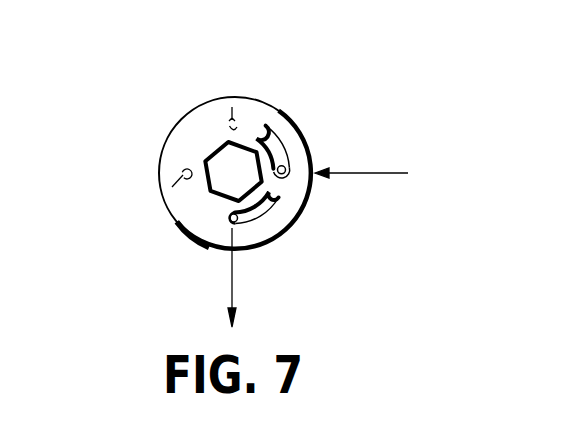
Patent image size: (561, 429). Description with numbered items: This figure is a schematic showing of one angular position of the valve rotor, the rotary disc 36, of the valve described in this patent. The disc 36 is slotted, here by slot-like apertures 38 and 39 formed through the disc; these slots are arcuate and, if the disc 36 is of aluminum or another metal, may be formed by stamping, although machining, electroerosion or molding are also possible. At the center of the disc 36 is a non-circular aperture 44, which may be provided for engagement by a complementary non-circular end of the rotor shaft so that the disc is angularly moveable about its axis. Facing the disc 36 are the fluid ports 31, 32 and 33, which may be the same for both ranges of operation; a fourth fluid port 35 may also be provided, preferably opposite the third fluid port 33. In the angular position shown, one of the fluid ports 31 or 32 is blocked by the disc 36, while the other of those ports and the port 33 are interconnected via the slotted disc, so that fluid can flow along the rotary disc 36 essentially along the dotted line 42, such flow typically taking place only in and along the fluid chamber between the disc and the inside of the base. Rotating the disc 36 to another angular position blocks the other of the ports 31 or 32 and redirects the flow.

The fluid port 31 is at (233, 232).
The fluid port 32 is at (228, 98).
The third fluid port 33 is at (288, 163).
The fourth fluid port 35 is at (163, 197).
The rotary disc 36 is at (308, 203).
The slot-like aperture 38 is at (272, 134).
The slot-like aperture 39 is at (285, 200).
The dotted line 42 is at (287, 220).
The non-circular aperture 44 is at (217, 150).